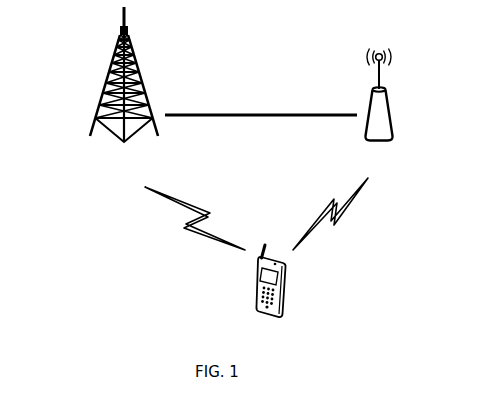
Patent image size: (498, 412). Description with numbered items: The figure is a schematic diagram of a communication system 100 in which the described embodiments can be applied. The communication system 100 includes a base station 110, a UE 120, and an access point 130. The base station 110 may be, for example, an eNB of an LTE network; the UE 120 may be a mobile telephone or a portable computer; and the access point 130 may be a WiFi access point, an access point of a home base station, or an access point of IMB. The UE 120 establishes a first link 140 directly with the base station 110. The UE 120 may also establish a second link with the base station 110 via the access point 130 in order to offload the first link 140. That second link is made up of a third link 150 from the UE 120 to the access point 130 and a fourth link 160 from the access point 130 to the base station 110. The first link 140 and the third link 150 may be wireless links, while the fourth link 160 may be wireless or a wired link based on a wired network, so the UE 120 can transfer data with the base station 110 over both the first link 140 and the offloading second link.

The communication system 100 is at (42, 43).
The base station 110 is at (124, 94).
The UE 120 is at (270, 292).
The access point 130 is at (378, 110).
The first link 140 is at (195, 218).
The third link 150 is at (334, 214).
The fourth link 160 is at (261, 101).